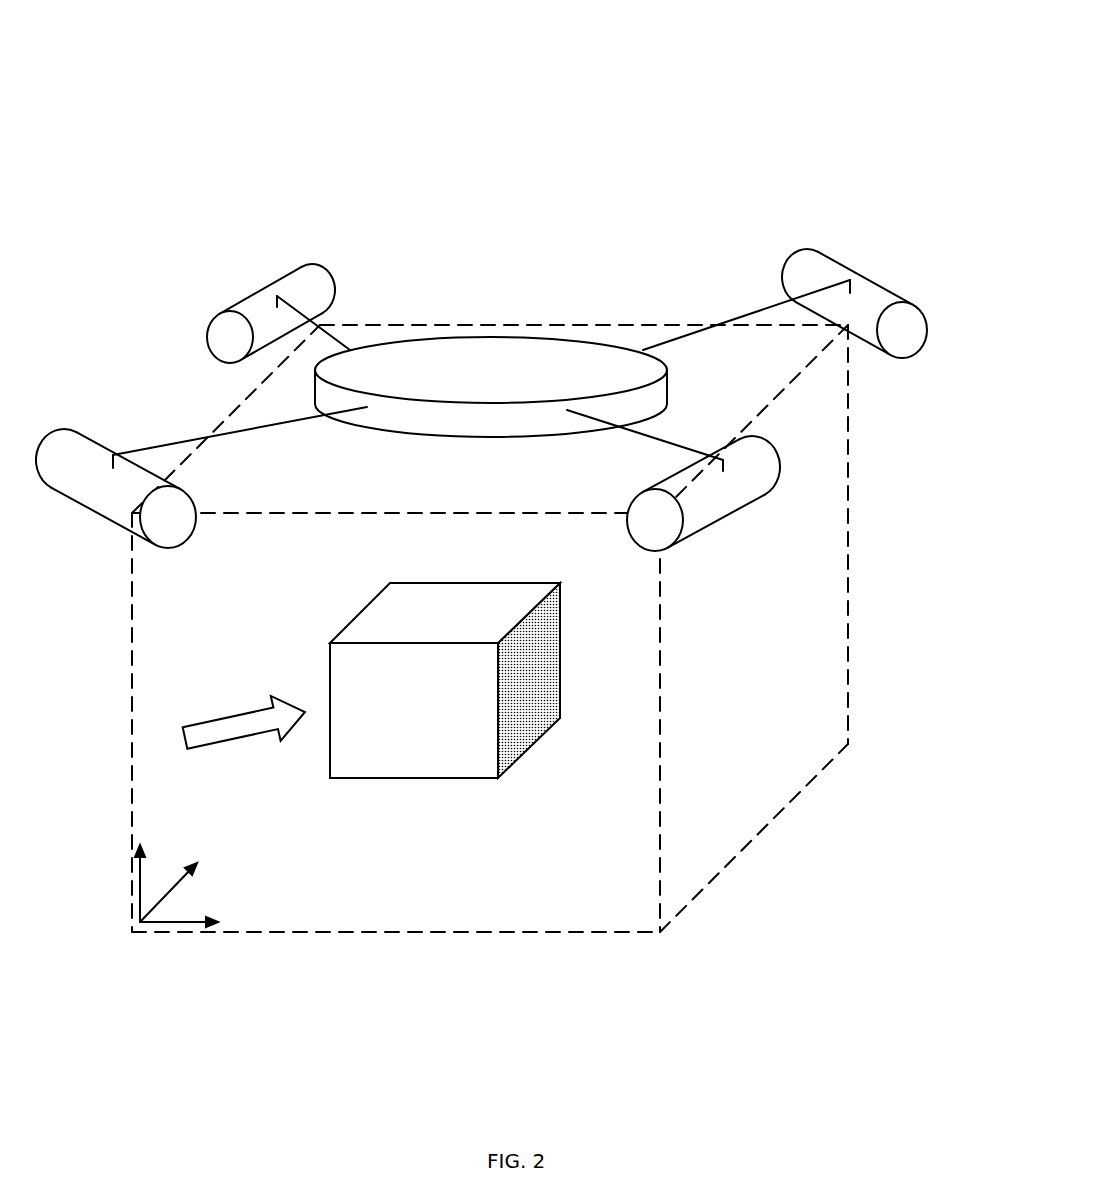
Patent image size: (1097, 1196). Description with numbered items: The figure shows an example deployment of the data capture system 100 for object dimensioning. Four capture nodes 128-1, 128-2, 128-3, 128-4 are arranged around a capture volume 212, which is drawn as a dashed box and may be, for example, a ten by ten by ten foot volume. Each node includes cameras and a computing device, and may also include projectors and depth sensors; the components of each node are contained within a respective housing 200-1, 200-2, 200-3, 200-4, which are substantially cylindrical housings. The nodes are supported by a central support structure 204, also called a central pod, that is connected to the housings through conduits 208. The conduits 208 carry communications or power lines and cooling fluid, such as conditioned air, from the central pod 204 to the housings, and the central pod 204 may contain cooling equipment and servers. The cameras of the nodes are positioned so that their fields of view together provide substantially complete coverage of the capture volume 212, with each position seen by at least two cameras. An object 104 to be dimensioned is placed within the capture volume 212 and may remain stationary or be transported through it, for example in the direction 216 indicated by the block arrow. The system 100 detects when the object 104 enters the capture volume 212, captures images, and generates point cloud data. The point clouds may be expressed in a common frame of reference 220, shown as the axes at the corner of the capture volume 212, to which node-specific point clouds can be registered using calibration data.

The data capture system 100 is at (680, 103).
The object 104 is at (470, 750).
The capture node 128-1 is at (290, 250).
The capture node 128-2 is at (93, 415).
The capture node 128-3 is at (712, 548).
The capture node 128-4 is at (888, 266).
The housing 200-1 is at (263, 271).
The housing 200-2 is at (116, 458).
The housing 200-3 is at (715, 535).
The housing 200-4 is at (870, 256).
The central support structure 204 is at (525, 353).
The conduits 208 is at (668, 438).
The capture volume 212 is at (763, 827).
The direction 216 is at (235, 742).
The common frame of reference 220 is at (160, 923).